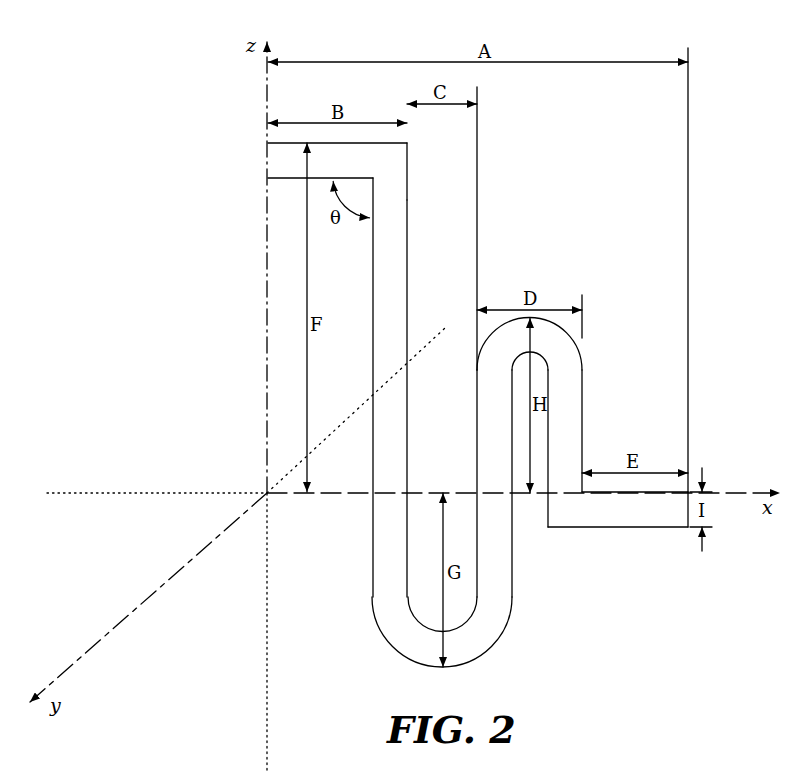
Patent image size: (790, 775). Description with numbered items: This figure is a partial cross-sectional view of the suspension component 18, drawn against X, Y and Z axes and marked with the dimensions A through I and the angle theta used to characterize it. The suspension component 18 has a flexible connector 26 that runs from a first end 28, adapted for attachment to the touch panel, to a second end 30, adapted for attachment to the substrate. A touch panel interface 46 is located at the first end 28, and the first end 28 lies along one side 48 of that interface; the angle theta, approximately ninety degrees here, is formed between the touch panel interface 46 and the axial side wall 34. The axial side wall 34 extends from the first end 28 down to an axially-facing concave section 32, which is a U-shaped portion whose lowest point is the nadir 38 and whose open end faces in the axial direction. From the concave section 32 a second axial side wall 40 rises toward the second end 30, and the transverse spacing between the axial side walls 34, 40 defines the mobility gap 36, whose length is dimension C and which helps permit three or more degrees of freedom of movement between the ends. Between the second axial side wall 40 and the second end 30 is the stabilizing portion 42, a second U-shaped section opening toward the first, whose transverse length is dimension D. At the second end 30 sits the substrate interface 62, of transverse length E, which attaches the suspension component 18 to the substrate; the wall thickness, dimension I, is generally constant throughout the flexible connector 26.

The suspension component 18 is at (491, 414).
The flexible connector 26 is at (405, 250).
The first end 28 is at (392, 182).
The second end 30 is at (567, 494).
The concave section 32 is at (488, 620).
The axial side wall 34 is at (395, 308).
The mobility gap 36 is at (442, 372).
The nadir 38 is at (443, 668).
The second axial side wall 40 is at (495, 562).
The stabilizing portion 42 is at (567, 368).
The touch panel interface 46 is at (278, 143).
The side of the touch panel interface 48 is at (407, 143).
The substrate interface 62 is at (675, 492).